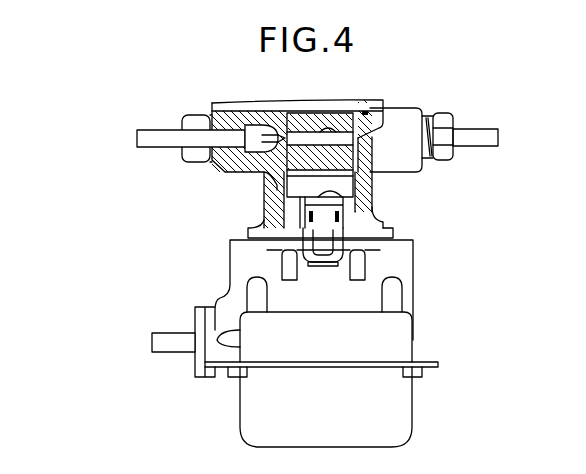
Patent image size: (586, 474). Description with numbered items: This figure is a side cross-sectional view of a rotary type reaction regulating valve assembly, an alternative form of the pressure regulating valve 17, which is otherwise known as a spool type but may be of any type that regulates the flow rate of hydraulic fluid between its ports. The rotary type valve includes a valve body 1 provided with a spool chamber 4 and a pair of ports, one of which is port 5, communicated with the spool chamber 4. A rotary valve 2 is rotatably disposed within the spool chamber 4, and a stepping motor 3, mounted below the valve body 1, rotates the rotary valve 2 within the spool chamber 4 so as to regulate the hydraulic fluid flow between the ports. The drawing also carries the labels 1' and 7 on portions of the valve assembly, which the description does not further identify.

The valve body 1 is at (313, 164).
The housing flange 1' is at (434, 174).
The rotary valve 2 is at (285, 184).
The stepping motor 3 is at (335, 340).
The spool chamber 4 is at (335, 178).
The port 5 is at (283, 163).
The rotor 7 is at (330, 131).
The pressure regulating valve 17 is at (26, 197).